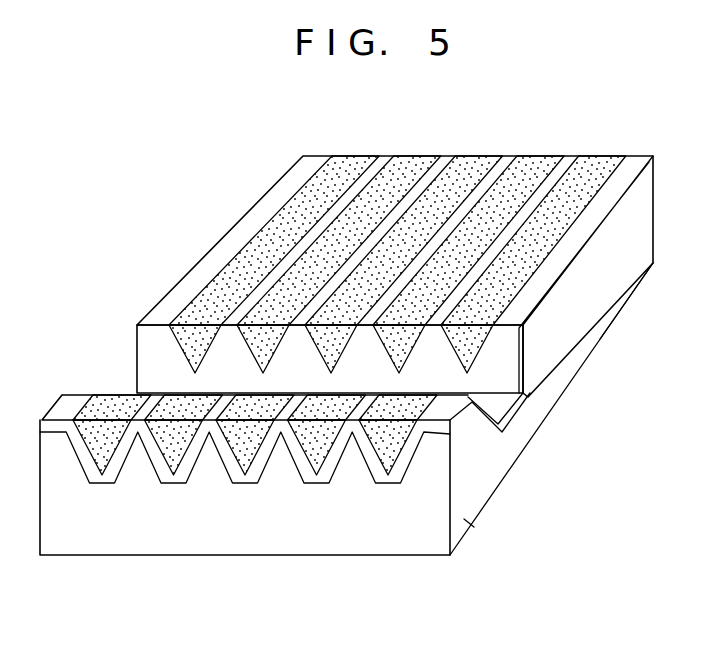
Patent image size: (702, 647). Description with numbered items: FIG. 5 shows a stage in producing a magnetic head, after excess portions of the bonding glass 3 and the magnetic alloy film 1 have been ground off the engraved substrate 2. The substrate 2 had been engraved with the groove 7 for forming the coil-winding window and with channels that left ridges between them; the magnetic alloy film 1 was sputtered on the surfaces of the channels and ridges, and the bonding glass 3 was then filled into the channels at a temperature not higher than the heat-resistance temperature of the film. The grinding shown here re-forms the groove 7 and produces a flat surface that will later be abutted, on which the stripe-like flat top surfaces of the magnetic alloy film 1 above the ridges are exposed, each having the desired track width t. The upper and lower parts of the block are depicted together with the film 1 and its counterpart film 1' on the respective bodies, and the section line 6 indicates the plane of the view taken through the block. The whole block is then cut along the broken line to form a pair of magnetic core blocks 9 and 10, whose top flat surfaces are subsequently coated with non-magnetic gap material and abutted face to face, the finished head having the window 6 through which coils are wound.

The magnetic alloy film 1 is at (395, 248).
The magnetic alloy film 1' is at (255, 505).
The substrate 2 is at (482, 486).
The bonding glass 3 is at (550, 158).
The window 6 is at (558, 462).
The groove 7 is at (500, 403).
The magnetic core block 9 is at (580, 348).
The magnetic core block 10 is at (469, 523).
The track width t is at (379, 156).